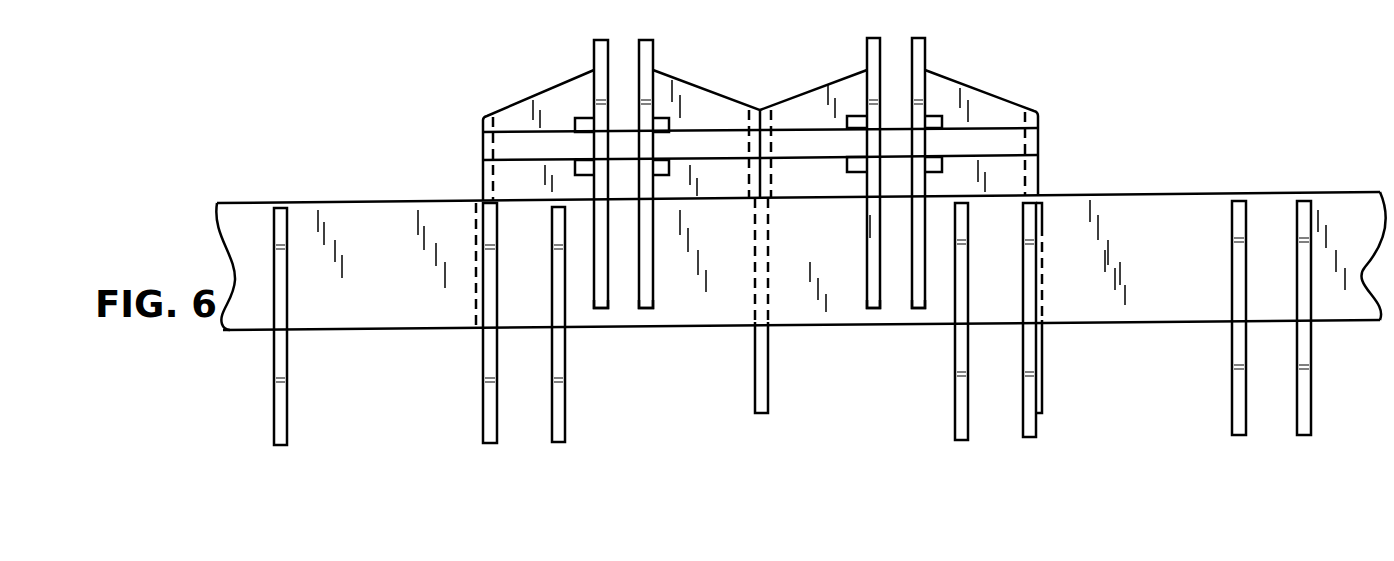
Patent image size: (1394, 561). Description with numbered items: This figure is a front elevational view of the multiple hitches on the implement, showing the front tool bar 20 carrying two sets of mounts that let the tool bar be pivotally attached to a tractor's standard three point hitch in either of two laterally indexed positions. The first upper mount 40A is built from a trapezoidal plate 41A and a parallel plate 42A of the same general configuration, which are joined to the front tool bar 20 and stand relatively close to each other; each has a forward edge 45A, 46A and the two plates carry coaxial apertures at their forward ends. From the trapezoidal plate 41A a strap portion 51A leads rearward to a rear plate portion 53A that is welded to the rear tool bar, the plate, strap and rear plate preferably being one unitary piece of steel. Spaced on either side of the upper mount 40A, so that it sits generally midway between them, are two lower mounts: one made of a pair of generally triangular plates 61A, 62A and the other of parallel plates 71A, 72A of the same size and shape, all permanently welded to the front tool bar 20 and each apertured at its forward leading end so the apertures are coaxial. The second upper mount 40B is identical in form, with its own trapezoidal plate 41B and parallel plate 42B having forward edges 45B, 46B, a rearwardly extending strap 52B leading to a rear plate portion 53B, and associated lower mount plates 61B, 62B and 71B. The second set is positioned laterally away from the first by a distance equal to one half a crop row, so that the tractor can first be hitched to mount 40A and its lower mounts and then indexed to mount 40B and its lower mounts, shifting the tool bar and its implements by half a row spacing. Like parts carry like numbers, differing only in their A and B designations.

The front tool bar 20 is at (1324, 191).
The upper mount 40A is at (981, 86).
The upper mount 40B is at (556, 85).
The trapezoidal plate 41A is at (927, 57).
The trapezoidal plate 41B is at (683, 60).
The plate 42A is at (865, 60).
The plate 42B is at (594, 63).
The forward edge 45A is at (925, 310).
The forward edge 45B is at (650, 312).
The forward edge 46A is at (878, 310).
The forward edge 46B is at (609, 312).
The strap portion 51A is at (1000, 108).
The rearwardly extending strap 52B is at (513, 115).
The rear plate portion 53A is at (1037, 167).
The rear plate portion 53B is at (482, 182).
The triangular plate 61A is at (1311, 363).
The triangular plate 61B is at (1036, 423).
The triangular plate 62A is at (1234, 363).
The triangular plate 62B is at (956, 428).
The parallel plate 71A is at (565, 426).
The parallel plate 71B is at (287, 430).
The parallel plate 72A is at (483, 430).